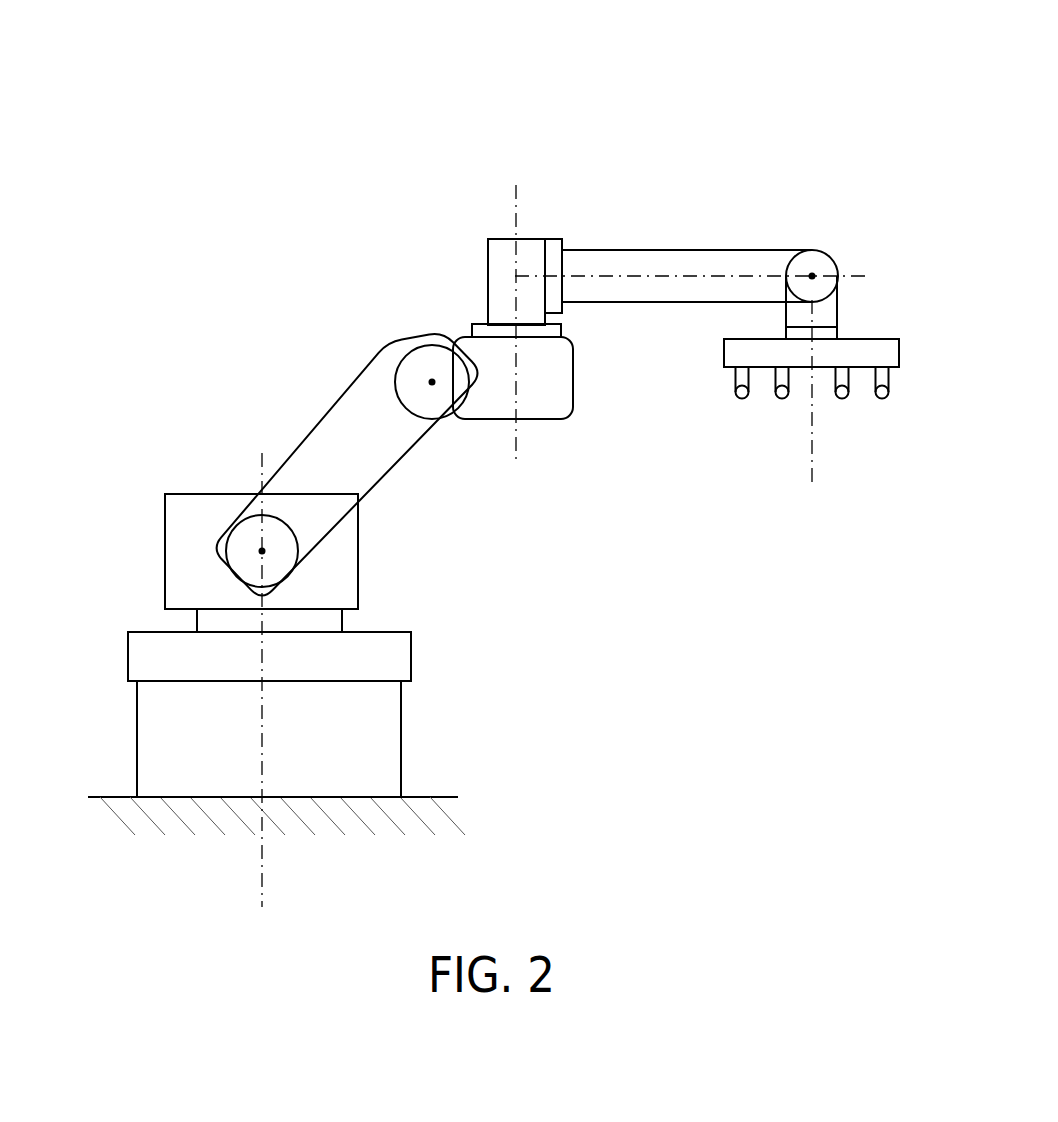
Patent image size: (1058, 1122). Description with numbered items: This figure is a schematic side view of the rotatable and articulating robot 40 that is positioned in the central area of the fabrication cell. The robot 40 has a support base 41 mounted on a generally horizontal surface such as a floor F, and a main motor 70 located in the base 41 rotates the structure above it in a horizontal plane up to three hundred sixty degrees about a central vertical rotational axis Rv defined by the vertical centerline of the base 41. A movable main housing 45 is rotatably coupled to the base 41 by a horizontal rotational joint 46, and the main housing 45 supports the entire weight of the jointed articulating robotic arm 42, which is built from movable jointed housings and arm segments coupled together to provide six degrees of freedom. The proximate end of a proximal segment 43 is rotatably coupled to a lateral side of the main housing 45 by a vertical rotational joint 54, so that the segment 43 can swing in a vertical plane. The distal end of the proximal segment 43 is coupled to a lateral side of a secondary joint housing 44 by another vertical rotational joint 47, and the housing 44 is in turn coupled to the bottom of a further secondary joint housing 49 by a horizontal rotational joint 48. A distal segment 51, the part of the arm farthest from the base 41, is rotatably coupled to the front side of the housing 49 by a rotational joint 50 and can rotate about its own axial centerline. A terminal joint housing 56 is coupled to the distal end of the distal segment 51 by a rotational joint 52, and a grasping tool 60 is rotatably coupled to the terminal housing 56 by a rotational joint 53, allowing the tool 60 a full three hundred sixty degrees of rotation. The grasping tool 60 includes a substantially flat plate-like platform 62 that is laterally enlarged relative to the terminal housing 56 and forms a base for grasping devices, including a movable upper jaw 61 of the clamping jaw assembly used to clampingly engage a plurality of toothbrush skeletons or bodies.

The robot 40 is at (262, 224).
The support base 41 is at (436, 705).
The robotic arm 42 is at (656, 270).
The proximal segment 43 is at (396, 476).
The secondary joint housing 44 is at (573, 397).
The main housing 45 is at (164, 548).
The horizontal rotational joint 46 is at (197, 621).
The vertical rotational joint 47 is at (424, 365).
The horizontal rotational joint 48 is at (478, 323).
The secondary joint housing 49 is at (500, 238).
The rotational joint 50 is at (552, 238).
The distal segment 51 is at (707, 249).
The rotational joint 52 is at (818, 268).
The rotational joint 53 is at (840, 327).
The vertical rotational joint 54 is at (250, 530).
The terminal joint housing 56 is at (803, 313).
The grasping tool 60 is at (843, 326).
The upper jaw 61 is at (890, 380).
The platform 62 is at (900, 352).
The main motor 70 is at (220, 740).
The floor F is at (115, 796).
The central vertical rotational axis Rv is at (254, 452).